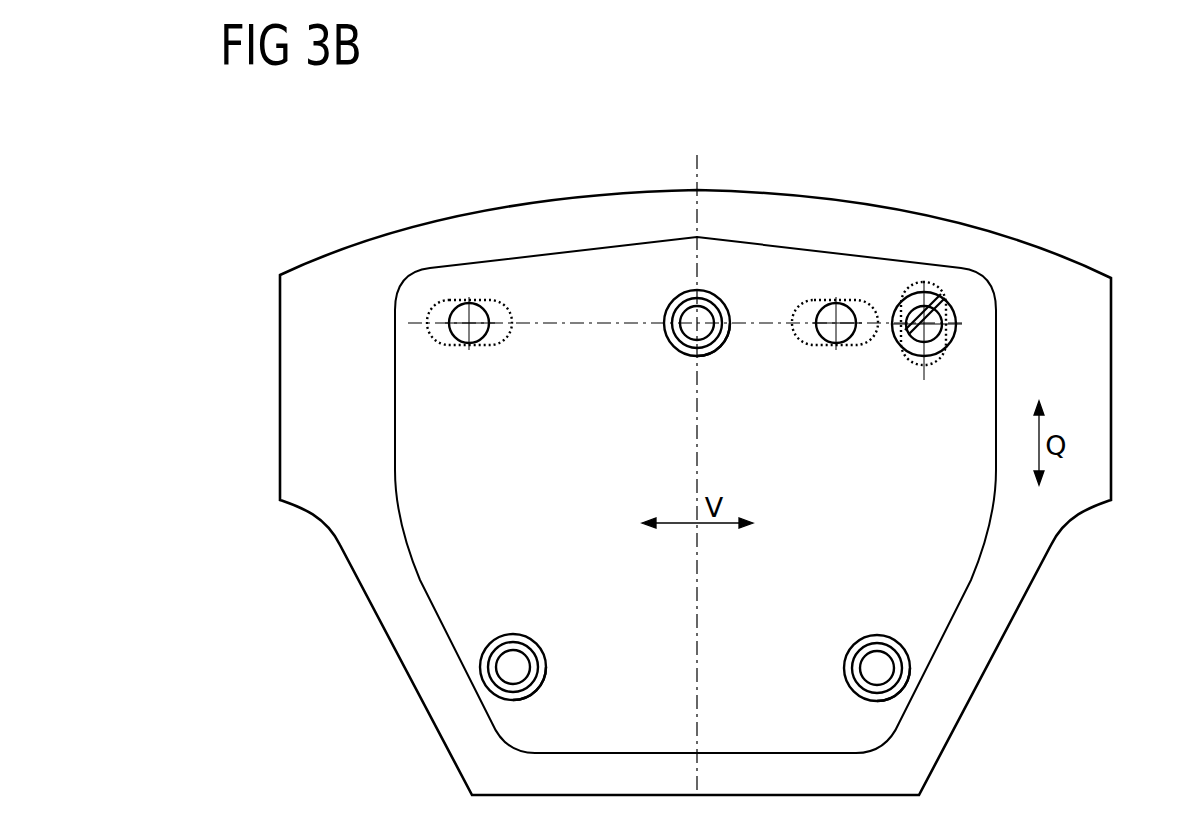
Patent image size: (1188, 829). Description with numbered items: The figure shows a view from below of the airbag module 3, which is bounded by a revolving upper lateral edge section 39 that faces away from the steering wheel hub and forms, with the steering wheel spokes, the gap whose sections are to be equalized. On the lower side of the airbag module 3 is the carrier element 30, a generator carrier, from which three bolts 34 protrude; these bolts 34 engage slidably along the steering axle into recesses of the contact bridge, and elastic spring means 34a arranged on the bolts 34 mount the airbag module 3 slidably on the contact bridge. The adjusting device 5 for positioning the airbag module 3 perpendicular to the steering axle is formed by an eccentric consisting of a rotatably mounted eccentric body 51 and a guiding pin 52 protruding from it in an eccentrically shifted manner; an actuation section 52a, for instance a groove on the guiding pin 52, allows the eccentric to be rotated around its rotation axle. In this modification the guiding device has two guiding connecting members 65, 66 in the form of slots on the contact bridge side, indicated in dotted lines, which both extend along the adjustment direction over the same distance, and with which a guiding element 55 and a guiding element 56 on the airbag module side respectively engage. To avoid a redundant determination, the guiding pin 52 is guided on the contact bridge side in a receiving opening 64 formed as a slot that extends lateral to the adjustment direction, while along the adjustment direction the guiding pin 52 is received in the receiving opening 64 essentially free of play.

The airbag module 3 is at (398, 224).
The adjusting device 5 is at (955, 305).
The carrier element 30 is at (427, 556).
The bolts 34 is at (702, 330).
The elastic spring means 34a is at (714, 352).
The upper lateral edge section 39 is at (280, 362).
The eccentric body 51 is at (957, 340).
The guiding pin 52 is at (943, 317).
The actuation section 52a is at (938, 296).
The guiding element 55 is at (472, 315).
The guiding element 56 is at (838, 321).
The receiving opening 64 is at (935, 360).
The guiding connecting member 65 is at (508, 308).
The guiding connecting member 66 is at (870, 308).